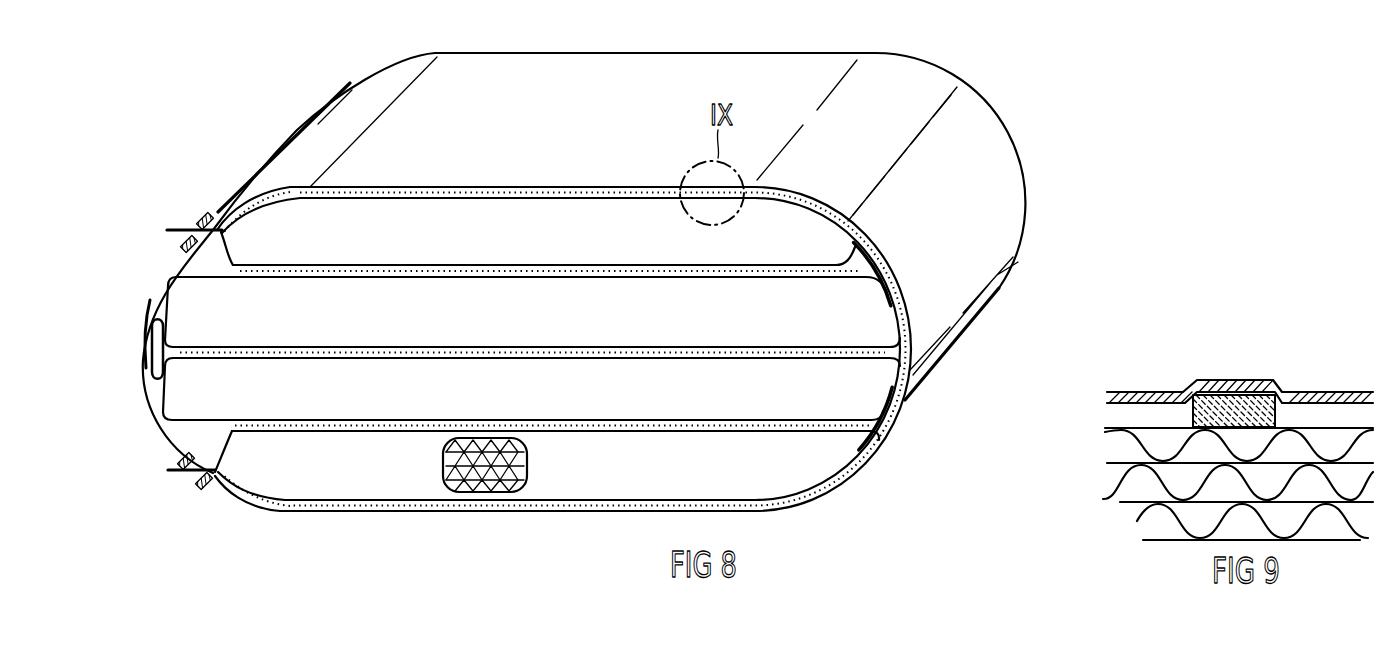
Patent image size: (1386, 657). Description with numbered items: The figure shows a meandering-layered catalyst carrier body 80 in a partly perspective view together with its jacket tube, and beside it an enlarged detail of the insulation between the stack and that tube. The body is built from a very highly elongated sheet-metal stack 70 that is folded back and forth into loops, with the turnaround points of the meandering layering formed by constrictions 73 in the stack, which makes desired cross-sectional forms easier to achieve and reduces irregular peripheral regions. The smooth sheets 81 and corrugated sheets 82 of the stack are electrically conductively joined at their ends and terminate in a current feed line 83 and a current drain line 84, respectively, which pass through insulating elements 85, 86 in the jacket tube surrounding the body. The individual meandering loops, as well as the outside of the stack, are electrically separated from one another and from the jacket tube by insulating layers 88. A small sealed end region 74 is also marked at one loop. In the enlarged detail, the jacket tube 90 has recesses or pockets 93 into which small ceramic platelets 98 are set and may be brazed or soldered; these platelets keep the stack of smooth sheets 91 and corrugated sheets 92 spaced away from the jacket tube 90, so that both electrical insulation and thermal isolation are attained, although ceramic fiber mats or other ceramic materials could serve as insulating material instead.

In FIG. 8, the sheet-metal stack 70 is at (463, 221).
In FIG. 8, the constrictions 73 is at (148, 357).
In FIG. 8, the end seal 74 is at (165, 325).
In FIG. 8, the catalyst carrier body 80 is at (988, 167).
In FIG. 8, the smooth sheets 81 is at (470, 493).
In FIG. 8, the corrugated sheets 82 is at (488, 493).
In FIG. 8, the current feed line 83 is at (192, 229).
In FIG. 8, the current drain line 84 is at (173, 473).
In FIG. 8, the insulating element 85 is at (206, 217).
In FIG. 8, the insulating element 86 is at (205, 490).
In FIG. 8, the insulating layers 88 is at (570, 358).
In FIG. 9, the jacket tube 90 is at (1307, 392).
In FIG. 9, the smooth sheets 91 is at (1153, 430).
In FIG. 9, the corrugated sheets 92 is at (1120, 475).
In FIG. 9, the recesses or pockets 93 is at (1193, 384).
In FIG. 9, the ceramic platelets 98 is at (1243, 402).